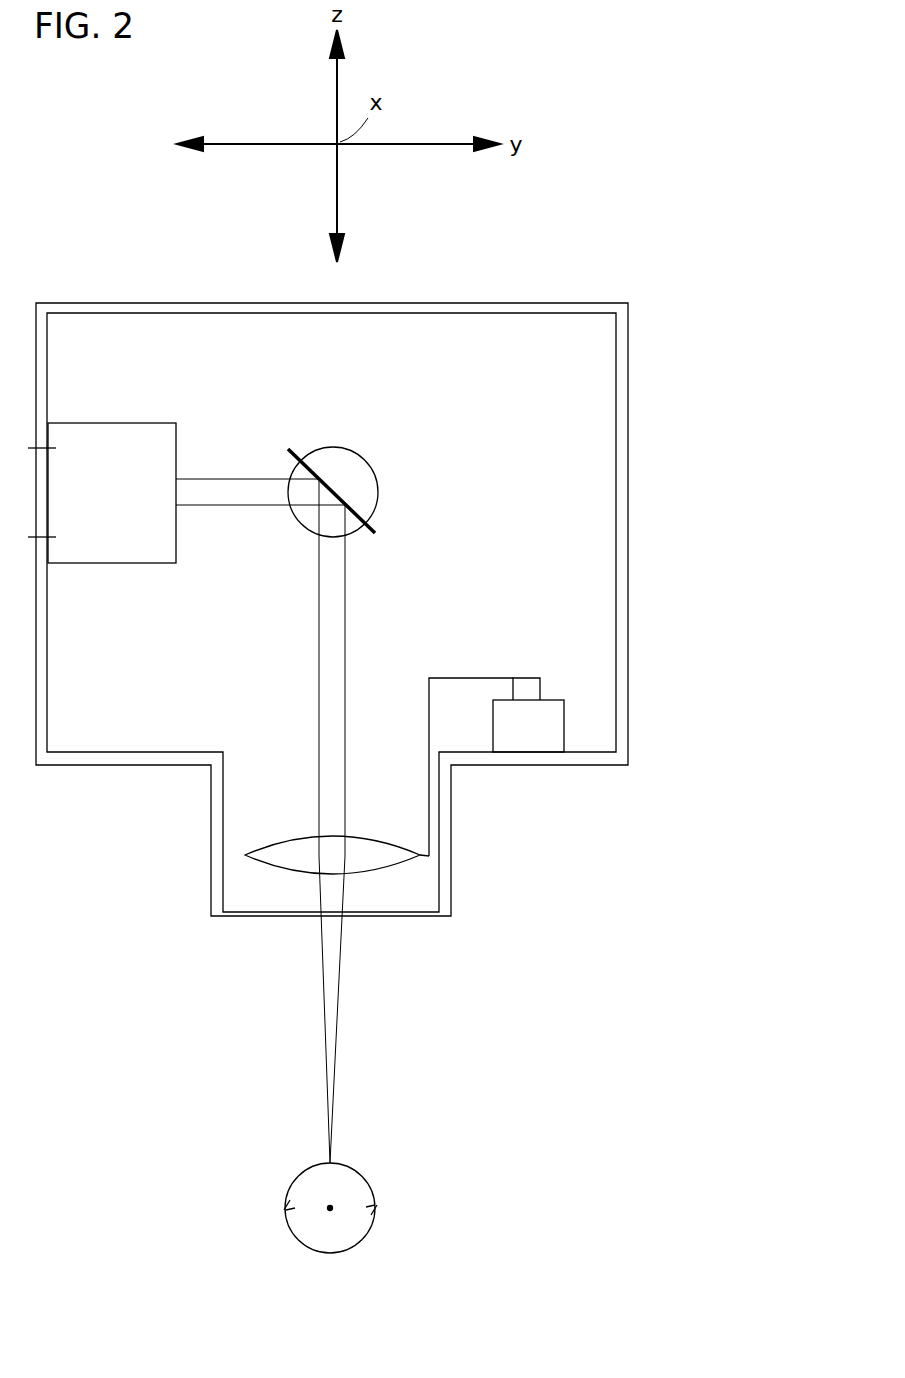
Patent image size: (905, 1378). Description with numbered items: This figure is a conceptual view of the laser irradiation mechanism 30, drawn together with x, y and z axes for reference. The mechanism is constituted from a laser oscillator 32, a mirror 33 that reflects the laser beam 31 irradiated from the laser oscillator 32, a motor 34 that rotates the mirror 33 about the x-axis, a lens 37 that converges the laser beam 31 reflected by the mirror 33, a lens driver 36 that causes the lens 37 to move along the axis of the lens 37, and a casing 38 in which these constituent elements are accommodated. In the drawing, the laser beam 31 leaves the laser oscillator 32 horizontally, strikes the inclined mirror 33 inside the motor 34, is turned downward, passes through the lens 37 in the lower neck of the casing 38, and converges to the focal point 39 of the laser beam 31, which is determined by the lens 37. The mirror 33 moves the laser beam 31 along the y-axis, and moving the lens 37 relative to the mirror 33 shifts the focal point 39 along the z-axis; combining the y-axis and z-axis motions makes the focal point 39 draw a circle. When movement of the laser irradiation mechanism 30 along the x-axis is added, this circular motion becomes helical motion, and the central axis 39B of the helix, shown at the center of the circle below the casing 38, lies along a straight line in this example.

The laser irradiation mechanism 30 is at (373, 733).
The laser beam 31 is at (232, 493).
The laser oscillator 32 is at (108, 565).
The mirror 33 is at (378, 540).
The motor 34 is at (340, 470).
The lens driver 36 is at (527, 732).
The lens 37 is at (370, 860).
The casing 38 is at (628, 700).
The focal point 39 is at (333, 1160).
The central axis 39B is at (335, 1215).